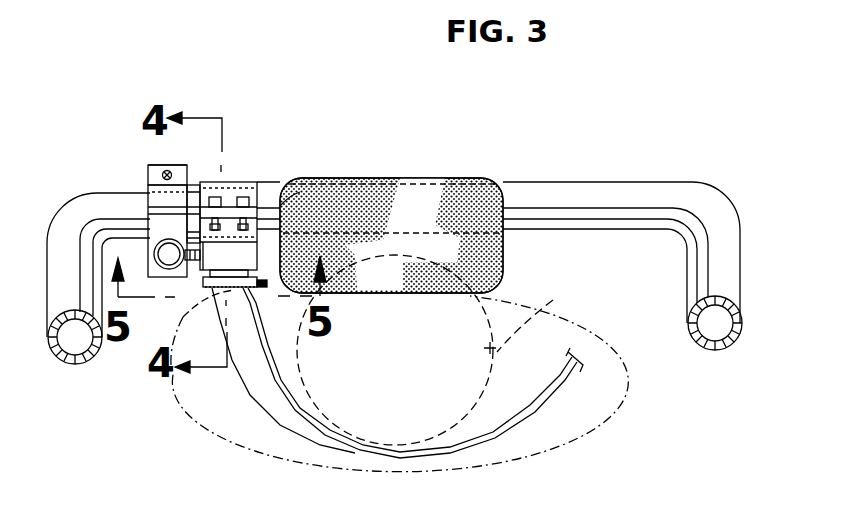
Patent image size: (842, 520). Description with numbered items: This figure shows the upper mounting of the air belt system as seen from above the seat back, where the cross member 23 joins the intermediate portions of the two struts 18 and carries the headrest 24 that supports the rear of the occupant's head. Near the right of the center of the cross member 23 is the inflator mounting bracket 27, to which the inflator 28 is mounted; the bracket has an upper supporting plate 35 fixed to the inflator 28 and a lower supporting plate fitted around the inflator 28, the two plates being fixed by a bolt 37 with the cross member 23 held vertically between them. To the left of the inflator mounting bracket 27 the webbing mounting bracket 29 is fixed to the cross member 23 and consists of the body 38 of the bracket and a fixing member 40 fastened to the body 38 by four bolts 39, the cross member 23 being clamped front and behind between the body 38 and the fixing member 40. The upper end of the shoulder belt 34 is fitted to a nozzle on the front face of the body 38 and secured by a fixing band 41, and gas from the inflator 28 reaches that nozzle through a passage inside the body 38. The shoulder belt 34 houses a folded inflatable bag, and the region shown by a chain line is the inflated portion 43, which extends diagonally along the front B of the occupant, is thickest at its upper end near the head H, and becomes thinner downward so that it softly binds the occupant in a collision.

The struts 18 is at (72, 364).
The cross member 23 is at (609, 190).
The headrest 24 is at (437, 178).
The inflator mounting bracket 27 is at (143, 165).
The inflator 28 is at (150, 253).
The webbing mounting bracket 29 is at (261, 180).
The shoulder belt 34 is at (283, 416).
The upper supporting plate 35 is at (157, 213).
The bolt 37 is at (177, 177).
The body of the bracket 38 is at (230, 262).
The bolts 39 is at (247, 200).
The fixing member 40 is at (292, 202).
The fixing band 41 is at (207, 296).
The inflated portion 43 is at (225, 443).
The head H is at (545, 297).
The front of the occupant B is at (547, 440).